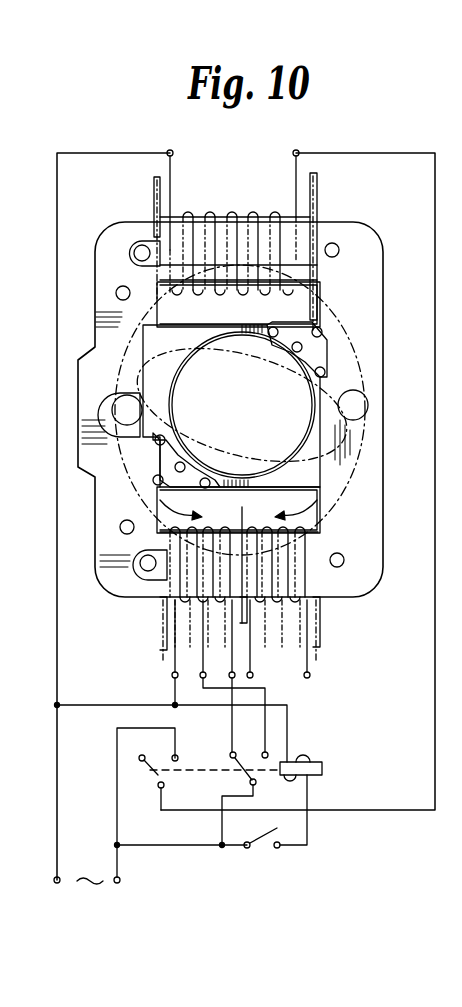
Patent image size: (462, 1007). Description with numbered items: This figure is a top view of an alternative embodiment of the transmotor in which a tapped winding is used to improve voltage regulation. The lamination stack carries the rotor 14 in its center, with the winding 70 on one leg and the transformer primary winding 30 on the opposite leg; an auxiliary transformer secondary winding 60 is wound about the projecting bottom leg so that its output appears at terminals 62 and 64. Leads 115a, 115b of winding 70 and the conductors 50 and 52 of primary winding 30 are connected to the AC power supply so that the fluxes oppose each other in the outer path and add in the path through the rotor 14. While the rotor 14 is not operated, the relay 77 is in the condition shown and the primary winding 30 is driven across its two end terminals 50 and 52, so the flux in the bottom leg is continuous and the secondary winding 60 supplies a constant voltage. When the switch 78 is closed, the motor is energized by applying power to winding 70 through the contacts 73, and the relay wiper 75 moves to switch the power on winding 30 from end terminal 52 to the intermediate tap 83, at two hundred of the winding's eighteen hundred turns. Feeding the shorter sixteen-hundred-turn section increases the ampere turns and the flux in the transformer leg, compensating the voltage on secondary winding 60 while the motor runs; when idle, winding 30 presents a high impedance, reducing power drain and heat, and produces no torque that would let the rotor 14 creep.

The rotor 14 is at (254, 418).
The primary winding 30 is at (155, 497).
The transformer secondary winding 60 is at (357, 497).
The winding 70 is at (238, 198).
The lead 115a is at (296, 150).
The lead 115b is at (170, 150).
The end terminal 50 is at (172, 675).
The intermediate tap 83 is at (203, 657).
The end terminal 52 is at (232, 743).
The terminal 64 is at (252, 678).
The terminal 62 is at (310, 677).
The contacts 73 is at (148, 772).
The relay wiper 75 is at (247, 772).
The relay 77 is at (340, 756).
The switch 78 is at (265, 848).